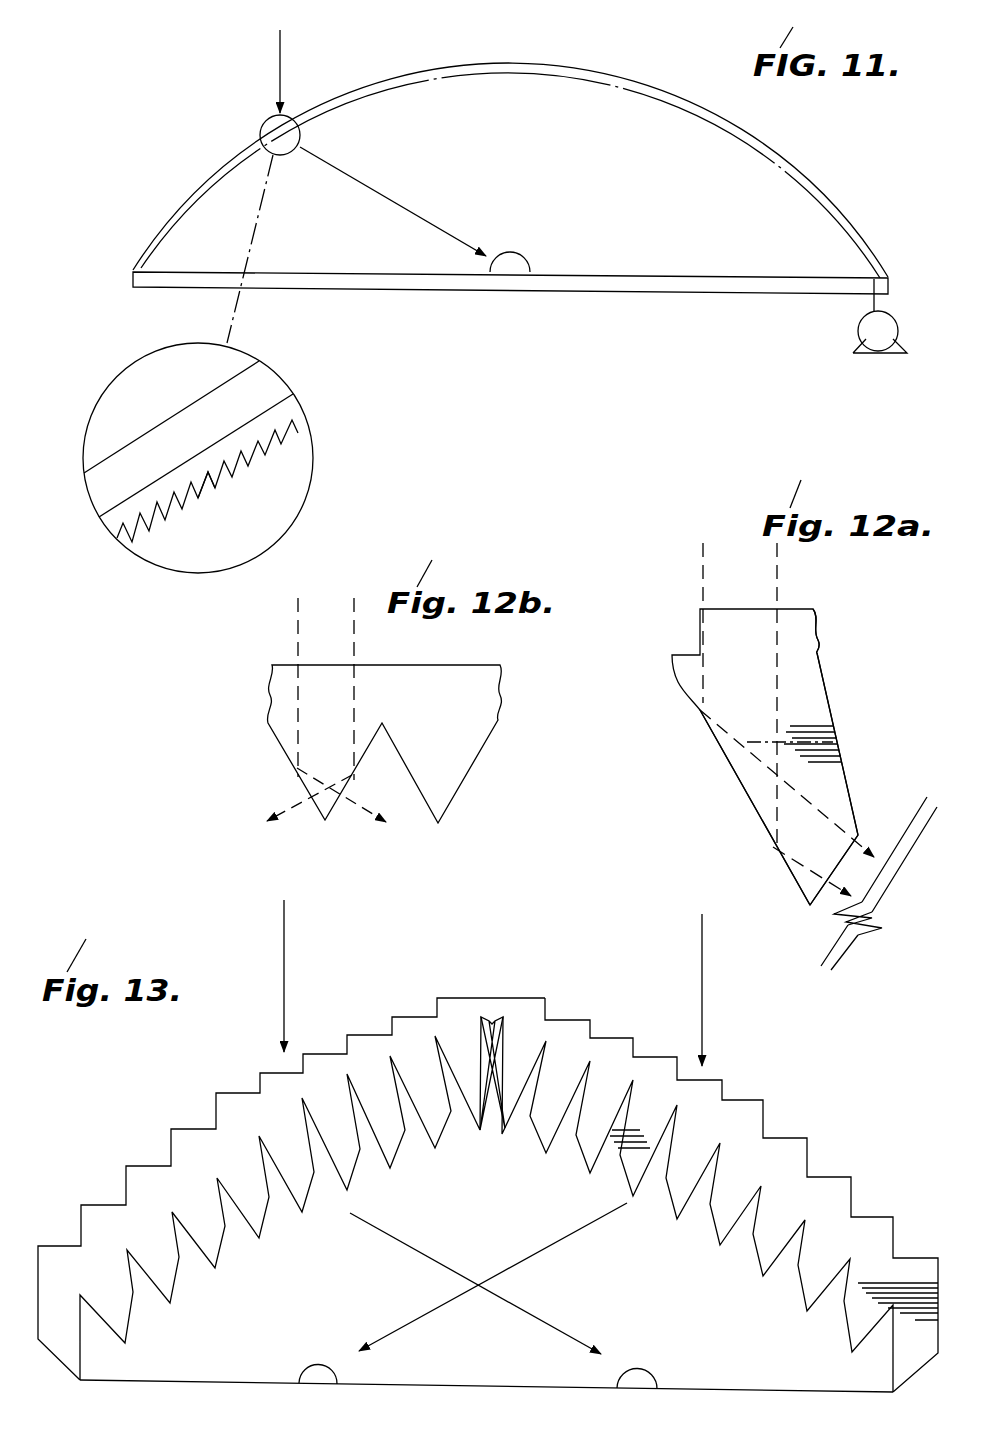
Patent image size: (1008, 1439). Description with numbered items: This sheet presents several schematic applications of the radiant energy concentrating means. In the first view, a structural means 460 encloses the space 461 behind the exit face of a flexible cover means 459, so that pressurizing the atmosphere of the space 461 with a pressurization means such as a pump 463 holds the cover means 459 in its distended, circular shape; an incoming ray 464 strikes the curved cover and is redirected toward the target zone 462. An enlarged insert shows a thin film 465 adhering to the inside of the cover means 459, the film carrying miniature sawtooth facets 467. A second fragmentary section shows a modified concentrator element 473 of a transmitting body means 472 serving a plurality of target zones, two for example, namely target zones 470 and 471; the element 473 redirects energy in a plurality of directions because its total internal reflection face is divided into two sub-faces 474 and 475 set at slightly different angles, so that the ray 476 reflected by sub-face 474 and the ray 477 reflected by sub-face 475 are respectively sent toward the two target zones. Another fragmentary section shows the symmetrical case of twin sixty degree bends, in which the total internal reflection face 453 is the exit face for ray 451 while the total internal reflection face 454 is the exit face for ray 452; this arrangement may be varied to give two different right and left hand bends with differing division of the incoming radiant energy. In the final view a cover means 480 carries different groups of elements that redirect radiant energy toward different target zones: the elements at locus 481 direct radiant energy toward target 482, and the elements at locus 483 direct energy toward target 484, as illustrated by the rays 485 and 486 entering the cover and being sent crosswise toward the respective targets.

In FIG. 11, the cover means 459 is at (747, 134).
In FIG. 11, the structural means 460 is at (657, 300).
In FIG. 11, the space 461 is at (503, 168).
In FIG. 11, the target zone 462 is at (528, 258).
In FIG. 11, the pump 463 is at (866, 334).
In FIG. 11, the ray 464 is at (278, 68).
In FIG. 11, the thin film 465 is at (174, 532).
In FIG. 11, the sawtooth facets 467 is at (215, 475).
In FIG. 12B, the ray 451 is at (355, 637).
In FIG. 12B, the ray 452 is at (297, 641).
In FIG. 12B, the T.I.R. face 453 is at (309, 811).
In FIG. 12B, the T.I.R. face 454 is at (342, 819).
In FIG. 12A, the target zone 470 is at (950, 918).
In FIG. 12A, the target zone 471 is at (946, 1010).
In FIG. 12A, the transmitting body means 472 is at (822, 712).
In FIG. 12A, the element 473 is at (852, 660).
In FIG. 12A, the sub-face 474 is at (727, 785).
In FIG. 12A, the sub-face 475 is at (788, 877).
In FIG. 12A, the ray 476 is at (702, 568).
In FIG. 12A, the ray 477 is at (778, 554).
In FIG. 13, the cover means 480 is at (498, 986).
In FIG. 13, the locus 481 is at (201, 1100).
In FIG. 13, the target 482 is at (646, 1369).
In FIG. 13, the locus 483 is at (728, 1075).
In FIG. 13, the target 484 is at (304, 1368).
In FIG. 13, the ray 485 is at (701, 975).
In FIG. 13, the ray 486 is at (284, 920).